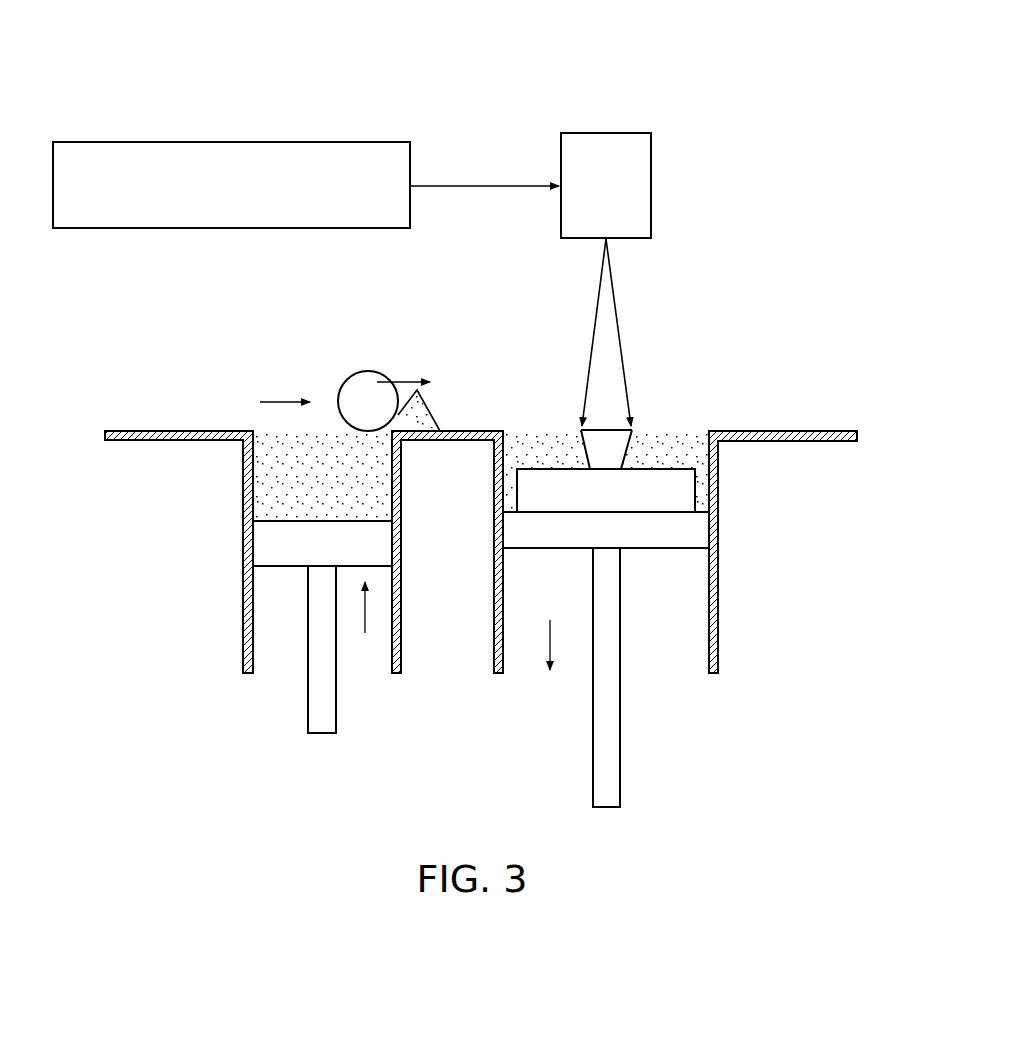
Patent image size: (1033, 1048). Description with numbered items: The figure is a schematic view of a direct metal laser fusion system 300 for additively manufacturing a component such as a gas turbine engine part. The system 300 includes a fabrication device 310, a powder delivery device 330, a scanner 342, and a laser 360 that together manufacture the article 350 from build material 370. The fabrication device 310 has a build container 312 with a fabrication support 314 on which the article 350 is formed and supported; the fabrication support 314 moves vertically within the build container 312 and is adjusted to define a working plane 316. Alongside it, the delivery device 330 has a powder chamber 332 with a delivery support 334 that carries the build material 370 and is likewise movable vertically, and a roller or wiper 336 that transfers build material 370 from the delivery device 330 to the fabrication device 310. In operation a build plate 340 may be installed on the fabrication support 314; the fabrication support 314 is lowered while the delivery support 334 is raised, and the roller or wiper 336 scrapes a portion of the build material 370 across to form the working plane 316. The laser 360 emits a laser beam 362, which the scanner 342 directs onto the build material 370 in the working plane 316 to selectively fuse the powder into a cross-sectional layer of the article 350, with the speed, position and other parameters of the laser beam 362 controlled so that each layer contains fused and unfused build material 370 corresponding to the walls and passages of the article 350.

The DMLF system 300 is at (768, 116).
The fabrication device 310 is at (685, 593).
The build container 312 is at (718, 458).
The fabrication support 314 is at (665, 548).
The working plane 316 is at (697, 430).
The powder delivery device 330 is at (274, 527).
The powder chamber 332 is at (248, 483).
The delivery support 334 is at (263, 540).
The roller or wiper 336 is at (370, 371).
The build plate 340 is at (555, 505).
The scanner 342 is at (608, 133).
The article 350 is at (570, 430).
The laser 360 is at (240, 142).
The laser beam 362 is at (488, 186).
The build material 370 is at (258, 467).